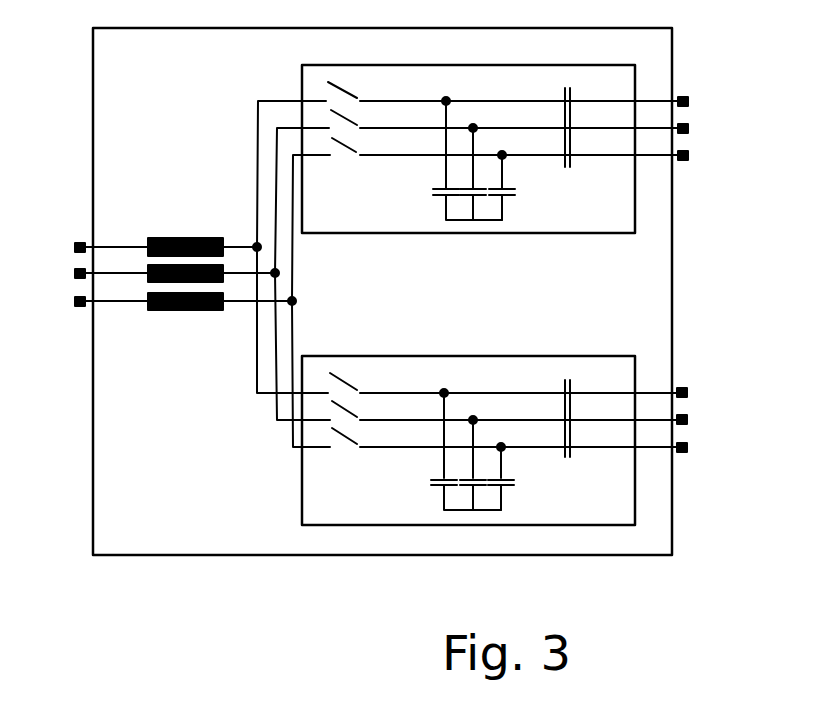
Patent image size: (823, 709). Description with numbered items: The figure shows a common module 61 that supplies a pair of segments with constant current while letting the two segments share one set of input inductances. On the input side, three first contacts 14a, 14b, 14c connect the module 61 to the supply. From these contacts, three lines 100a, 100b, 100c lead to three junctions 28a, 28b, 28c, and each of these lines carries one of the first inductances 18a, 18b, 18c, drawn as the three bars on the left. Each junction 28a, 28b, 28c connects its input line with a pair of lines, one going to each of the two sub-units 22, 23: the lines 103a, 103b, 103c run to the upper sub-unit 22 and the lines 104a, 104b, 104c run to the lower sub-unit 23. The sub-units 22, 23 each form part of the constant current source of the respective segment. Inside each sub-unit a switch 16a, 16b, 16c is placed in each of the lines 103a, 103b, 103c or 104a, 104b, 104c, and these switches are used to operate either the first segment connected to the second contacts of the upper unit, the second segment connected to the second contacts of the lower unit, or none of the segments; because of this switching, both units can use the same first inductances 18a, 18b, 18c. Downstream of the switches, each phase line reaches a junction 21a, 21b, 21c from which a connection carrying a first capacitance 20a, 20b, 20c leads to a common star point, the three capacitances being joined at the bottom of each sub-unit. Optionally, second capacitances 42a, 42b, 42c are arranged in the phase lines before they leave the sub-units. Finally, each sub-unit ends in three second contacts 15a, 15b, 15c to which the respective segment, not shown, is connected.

The module 61 is at (350, 558).
The sub-unit 22 is at (545, 62).
The sub-unit 23 is at (518, 355).
The first contact 14a is at (77, 307).
The first contact 14b is at (76, 278).
The first contact 14c is at (78, 243).
The first inductance 18a is at (200, 311).
The first inductance 18b is at (148, 277).
The first inductance 18c is at (154, 239).
The line 100a is at (243, 305).
The line 100b is at (242, 271).
The line 100c is at (233, 243).
The junction 28a is at (292, 301).
The junction 28b is at (275, 273).
The junction 28c is at (257, 247).
The line 103a is at (295, 198).
The line 103b is at (274, 143).
The line 103c is at (267, 99).
The line 104a is at (293, 452).
The line 104b is at (282, 424).
The line 104c is at (256, 385).
The switch 16a is at (353, 152).
The switch 16b is at (353, 123).
The switch 16c is at (354, 93).
The junction 21a is at (503, 153).
The junction 21b is at (475, 126).
The junction 21c is at (448, 97).
The first capacitance 20a is at (503, 194).
The first capacitance 20b is at (484, 187).
The first capacitance 20c is at (443, 194).
The second capacitance 42a is at (572, 152).
The second capacitance 42b is at (572, 124).
The second capacitance 42c is at (572, 97).
The second contact 15a is at (690, 154).
The second contact 15b is at (690, 126).
The second contact 15c is at (689, 97).